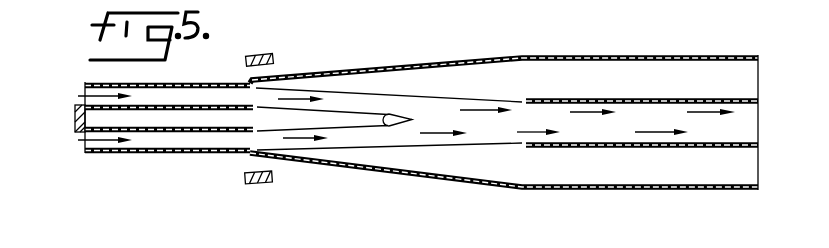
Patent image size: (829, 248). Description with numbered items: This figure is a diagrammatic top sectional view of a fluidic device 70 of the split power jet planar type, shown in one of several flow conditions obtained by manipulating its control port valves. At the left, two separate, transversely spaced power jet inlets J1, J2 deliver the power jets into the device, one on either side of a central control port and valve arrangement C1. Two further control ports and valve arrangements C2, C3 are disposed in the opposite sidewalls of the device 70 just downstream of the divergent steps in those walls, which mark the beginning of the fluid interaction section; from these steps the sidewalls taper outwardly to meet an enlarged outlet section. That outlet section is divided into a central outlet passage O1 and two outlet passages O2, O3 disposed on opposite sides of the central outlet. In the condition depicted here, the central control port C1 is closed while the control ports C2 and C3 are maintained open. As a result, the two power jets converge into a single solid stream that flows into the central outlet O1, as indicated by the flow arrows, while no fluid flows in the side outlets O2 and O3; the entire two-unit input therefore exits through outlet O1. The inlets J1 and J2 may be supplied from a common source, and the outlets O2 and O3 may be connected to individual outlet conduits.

The fluidic device 70 is at (444, 57).
The power jet inlet J1 is at (84, 93).
The power jet inlet J2 is at (84, 146).
The central control port and valve arrangement C1 is at (75, 120).
The control port and valve arrangement C2 is at (262, 53).
The control port and valve arrangement C3 is at (258, 184).
The central outlet passage O1 is at (609, 126).
The outlet passage O2 is at (662, 82).
The outlet passage O3 is at (663, 169).